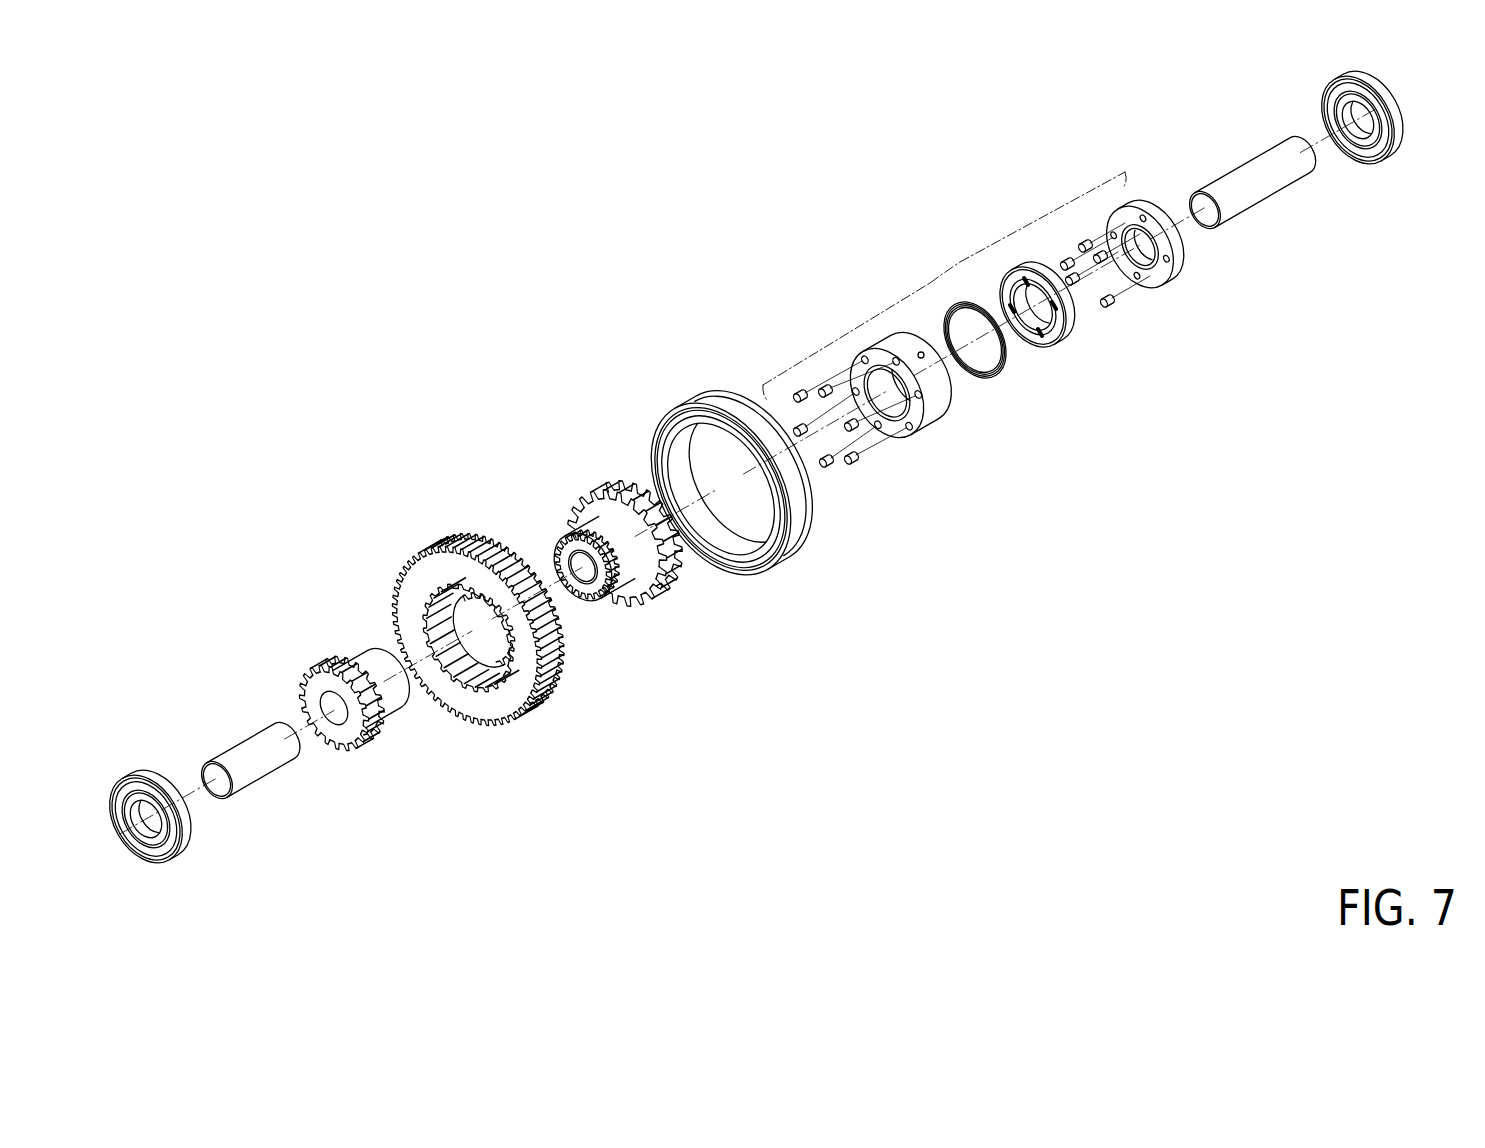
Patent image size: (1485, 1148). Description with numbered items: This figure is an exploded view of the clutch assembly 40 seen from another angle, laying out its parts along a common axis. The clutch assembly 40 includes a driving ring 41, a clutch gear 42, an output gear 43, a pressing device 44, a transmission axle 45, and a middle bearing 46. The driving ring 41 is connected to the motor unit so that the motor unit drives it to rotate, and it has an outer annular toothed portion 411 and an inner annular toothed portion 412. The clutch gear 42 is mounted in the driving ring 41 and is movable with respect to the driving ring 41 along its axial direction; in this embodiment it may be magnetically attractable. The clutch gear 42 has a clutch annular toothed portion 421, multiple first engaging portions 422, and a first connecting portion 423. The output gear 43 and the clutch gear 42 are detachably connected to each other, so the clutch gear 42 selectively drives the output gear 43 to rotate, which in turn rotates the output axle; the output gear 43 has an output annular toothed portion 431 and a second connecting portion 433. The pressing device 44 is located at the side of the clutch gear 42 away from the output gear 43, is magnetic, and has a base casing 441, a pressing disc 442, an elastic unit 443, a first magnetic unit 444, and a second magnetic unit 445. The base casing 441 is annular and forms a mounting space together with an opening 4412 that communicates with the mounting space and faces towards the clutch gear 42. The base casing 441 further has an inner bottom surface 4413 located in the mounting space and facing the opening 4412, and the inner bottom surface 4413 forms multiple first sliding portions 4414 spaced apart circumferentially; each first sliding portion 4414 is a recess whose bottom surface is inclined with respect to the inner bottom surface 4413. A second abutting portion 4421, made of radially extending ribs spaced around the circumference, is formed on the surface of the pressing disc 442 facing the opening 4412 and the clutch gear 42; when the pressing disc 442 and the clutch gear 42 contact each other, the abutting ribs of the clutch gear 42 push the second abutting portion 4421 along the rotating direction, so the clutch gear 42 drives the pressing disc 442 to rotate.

The clutch assembly 40 is at (282, 216).
The driving ring 41 is at (416, 528).
The outer annular toothed portion 411 is at (527, 702).
The inner annular toothed portion 412 is at (478, 690).
The clutch gear 42 is at (575, 482).
The clutch annular toothed portion 421 is at (653, 592).
The first engaging portions 422 is at (585, 602).
The first connecting portion 423 is at (620, 600).
The output gear 43 is at (312, 655).
The output annular toothed portion 431 is at (370, 737).
The second connecting portion 433 is at (392, 702).
The pressing device 44 is at (944, 270).
The base casing 441 is at (893, 455).
The opening 4412 is at (905, 418).
The inner bottom surface 4413 is at (1165, 290).
The first sliding portion 4414 is at (1180, 240).
The pressing disc 442 is at (1033, 357).
The second abutting portion 4421 is at (1052, 343).
The elastic unit 443 is at (980, 385).
The first magnetic unit 444 is at (830, 470).
The second magnetic unit 445 is at (1112, 310).
The transmission axle 45 is at (262, 750).
The middle bearing 46 is at (780, 543).